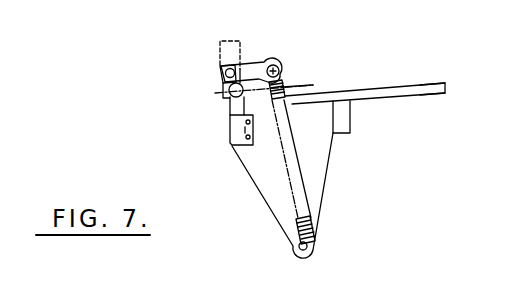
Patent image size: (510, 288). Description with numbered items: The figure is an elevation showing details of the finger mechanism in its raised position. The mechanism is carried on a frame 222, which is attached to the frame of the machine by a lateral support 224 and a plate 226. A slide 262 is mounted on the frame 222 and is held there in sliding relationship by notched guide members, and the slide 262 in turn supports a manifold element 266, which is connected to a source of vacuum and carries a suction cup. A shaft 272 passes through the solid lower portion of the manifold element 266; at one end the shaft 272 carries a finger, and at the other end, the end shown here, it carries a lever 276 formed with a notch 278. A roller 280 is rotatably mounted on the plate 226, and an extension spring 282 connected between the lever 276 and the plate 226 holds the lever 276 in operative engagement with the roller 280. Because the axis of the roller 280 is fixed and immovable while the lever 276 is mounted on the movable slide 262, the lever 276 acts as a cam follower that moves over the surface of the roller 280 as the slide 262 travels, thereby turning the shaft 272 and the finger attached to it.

The manifold element 266 is at (231, 44).
The shaft 272 is at (226, 70).
The notch 278 is at (257, 73).
The lever 276 is at (278, 63).
The roller 280 is at (226, 93).
The slide 262 is at (362, 90).
The frame 222 is at (423, 95).
The lateral support 224 is at (350, 118).
The plate 226 is at (322, 182).
The extension spring 282 is at (293, 207).